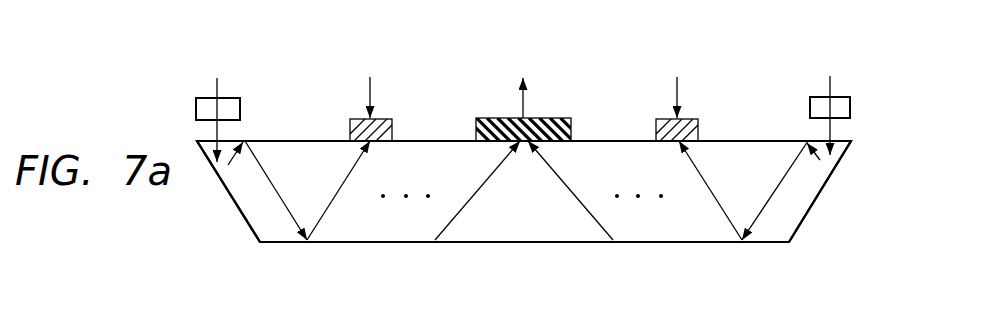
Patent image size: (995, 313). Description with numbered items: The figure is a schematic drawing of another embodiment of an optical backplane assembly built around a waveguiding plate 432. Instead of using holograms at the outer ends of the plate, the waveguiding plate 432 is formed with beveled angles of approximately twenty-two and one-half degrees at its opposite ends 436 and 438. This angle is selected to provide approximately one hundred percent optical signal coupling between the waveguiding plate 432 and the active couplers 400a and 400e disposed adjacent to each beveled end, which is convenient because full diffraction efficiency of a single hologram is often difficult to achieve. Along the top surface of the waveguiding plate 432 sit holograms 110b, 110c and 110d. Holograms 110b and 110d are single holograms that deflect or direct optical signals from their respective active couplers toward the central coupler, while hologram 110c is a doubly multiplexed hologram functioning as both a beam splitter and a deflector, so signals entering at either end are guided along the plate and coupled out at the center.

The active coupler 400a is at (196, 106).
The active coupler 400e is at (840, 96).
The single hologram 110b is at (349, 126).
The doubly multiplexed hologram 110c is at (475, 127).
The single hologram 110d is at (699, 126).
The waveguiding plate 432 is at (542, 225).
The beveled end 436 is at (227, 190).
The beveled end 438 is at (821, 190).